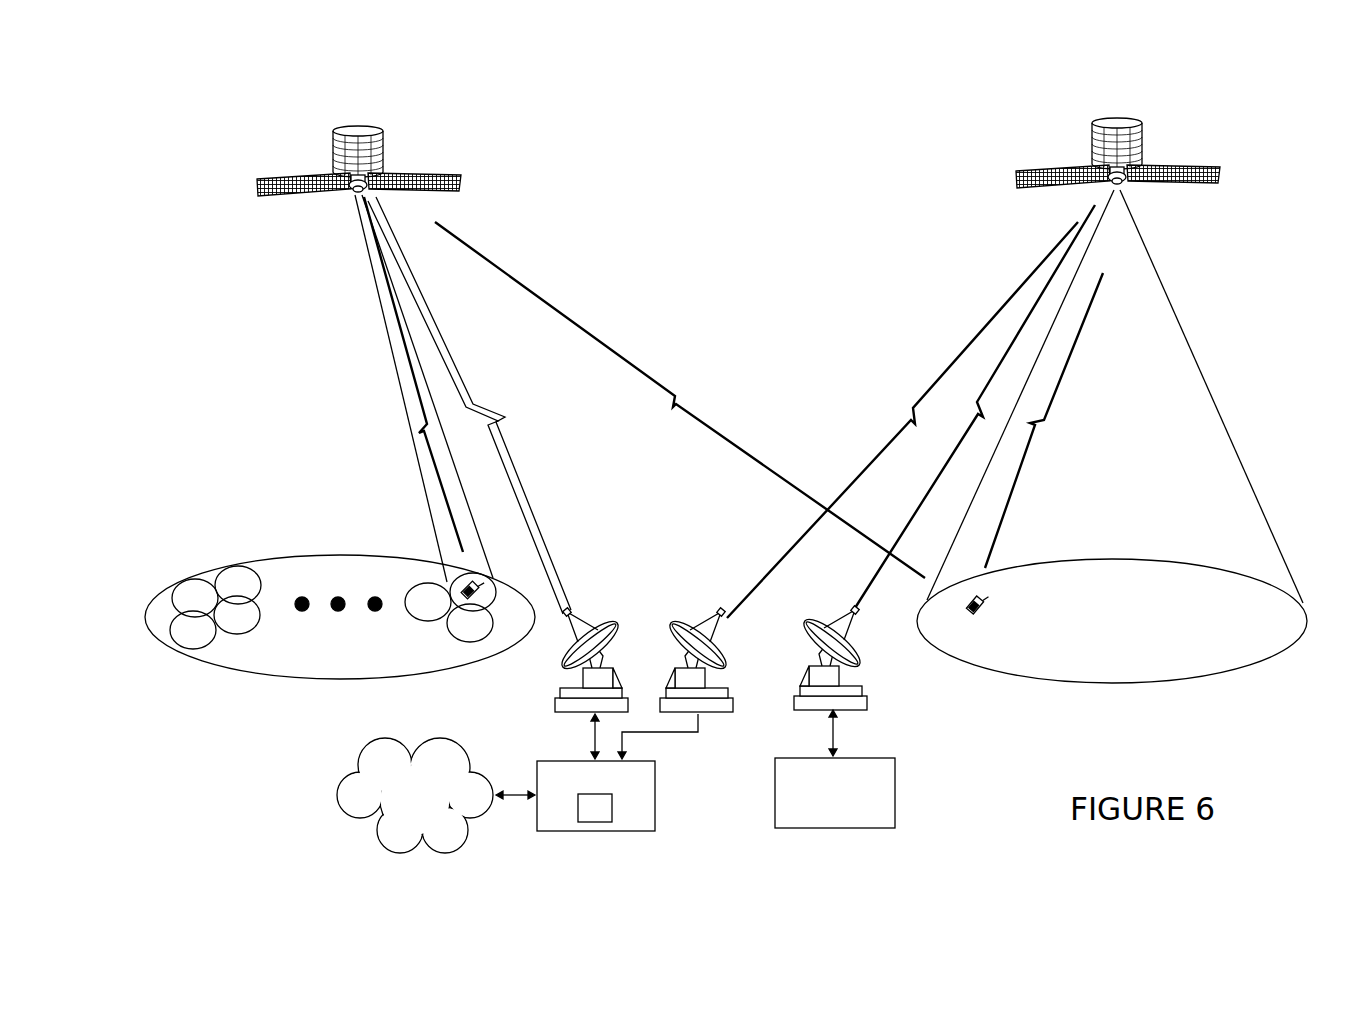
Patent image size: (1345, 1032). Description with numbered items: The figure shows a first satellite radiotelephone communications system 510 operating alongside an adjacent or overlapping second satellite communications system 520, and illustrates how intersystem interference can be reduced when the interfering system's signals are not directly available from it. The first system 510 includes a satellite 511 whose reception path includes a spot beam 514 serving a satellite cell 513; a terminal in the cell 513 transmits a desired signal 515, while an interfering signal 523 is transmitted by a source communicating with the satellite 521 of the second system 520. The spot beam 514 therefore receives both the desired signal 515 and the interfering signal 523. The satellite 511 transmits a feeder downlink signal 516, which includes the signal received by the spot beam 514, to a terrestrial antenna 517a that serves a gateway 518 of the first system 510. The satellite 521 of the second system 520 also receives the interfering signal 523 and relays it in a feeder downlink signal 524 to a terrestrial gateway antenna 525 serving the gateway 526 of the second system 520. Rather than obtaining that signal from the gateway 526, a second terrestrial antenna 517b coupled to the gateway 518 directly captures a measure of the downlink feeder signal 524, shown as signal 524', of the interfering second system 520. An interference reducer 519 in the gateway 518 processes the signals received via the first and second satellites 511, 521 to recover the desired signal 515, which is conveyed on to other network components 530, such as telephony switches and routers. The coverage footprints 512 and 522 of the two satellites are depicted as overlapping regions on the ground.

The first satellite radiotelephone communications system 510 is at (420, 167).
The satellite 511 is at (293, 196).
The first satellite coverage area 512 is at (237, 673).
The satellite cell 513 is at (522, 628).
The spot beam 514 is at (425, 485).
The desired signal 515 is at (424, 437).
The feeder downlink signal 516 is at (490, 423).
The terrestrial antenna 517a is at (620, 636).
The terrestrial antenna 517b is at (672, 636).
The gateway 518 is at (655, 776).
The interference reducer 519 is at (612, 808).
The second satellite communications system 520 is at (1175, 156).
The satellite 521 is at (1043, 184).
The second satellite coverage area 522 is at (1210, 672).
The interfering signal 523 is at (718, 428).
The feeder downlink signal 524 is at (975, 406).
The feeder link 524' is at (902, 420).
The terrestrial gateway antenna 525 is at (850, 712).
The gateway 526 is at (895, 790).
The other network components 530 is at (386, 740).